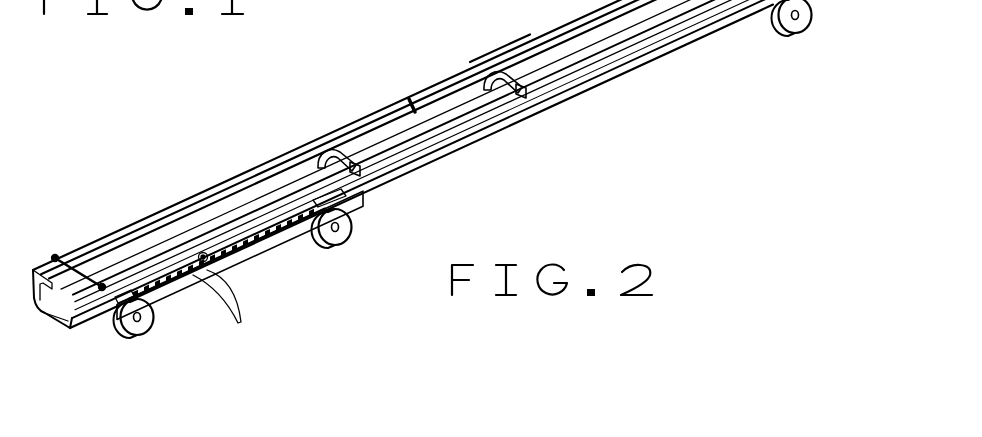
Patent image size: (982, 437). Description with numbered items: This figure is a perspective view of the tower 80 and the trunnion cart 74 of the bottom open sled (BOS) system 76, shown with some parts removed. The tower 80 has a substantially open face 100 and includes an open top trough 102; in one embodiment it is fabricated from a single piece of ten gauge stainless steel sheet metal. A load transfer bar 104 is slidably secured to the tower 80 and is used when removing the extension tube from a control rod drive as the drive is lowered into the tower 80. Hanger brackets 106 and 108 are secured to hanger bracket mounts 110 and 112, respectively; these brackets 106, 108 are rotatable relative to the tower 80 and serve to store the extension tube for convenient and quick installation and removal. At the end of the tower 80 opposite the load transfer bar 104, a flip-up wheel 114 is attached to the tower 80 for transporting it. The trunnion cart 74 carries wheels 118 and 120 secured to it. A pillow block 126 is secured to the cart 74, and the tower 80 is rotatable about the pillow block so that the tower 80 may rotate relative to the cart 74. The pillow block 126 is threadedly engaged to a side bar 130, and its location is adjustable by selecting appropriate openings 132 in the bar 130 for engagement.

The trunnion cart 74 is at (258, 282).
The BOS system 76 is at (233, 132).
The tower 80 is at (604, 97).
The open face 100 is at (412, 105).
The open top trough 102 is at (47, 310).
The load transfer bar 104 is at (88, 247).
The hanger bracket 106 is at (337, 147).
The hanger bracket 108 is at (510, 53).
The hanger bracket mount 110 is at (363, 173).
The hanger bracket mount 112 is at (548, 100).
The flip-up wheel 114 is at (785, 32).
The wheel 118 is at (152, 325).
The wheel 120 is at (348, 232).
The pillow block 126 is at (207, 252).
The side bar 130 is at (277, 240).
The openings 132 is at (243, 322).